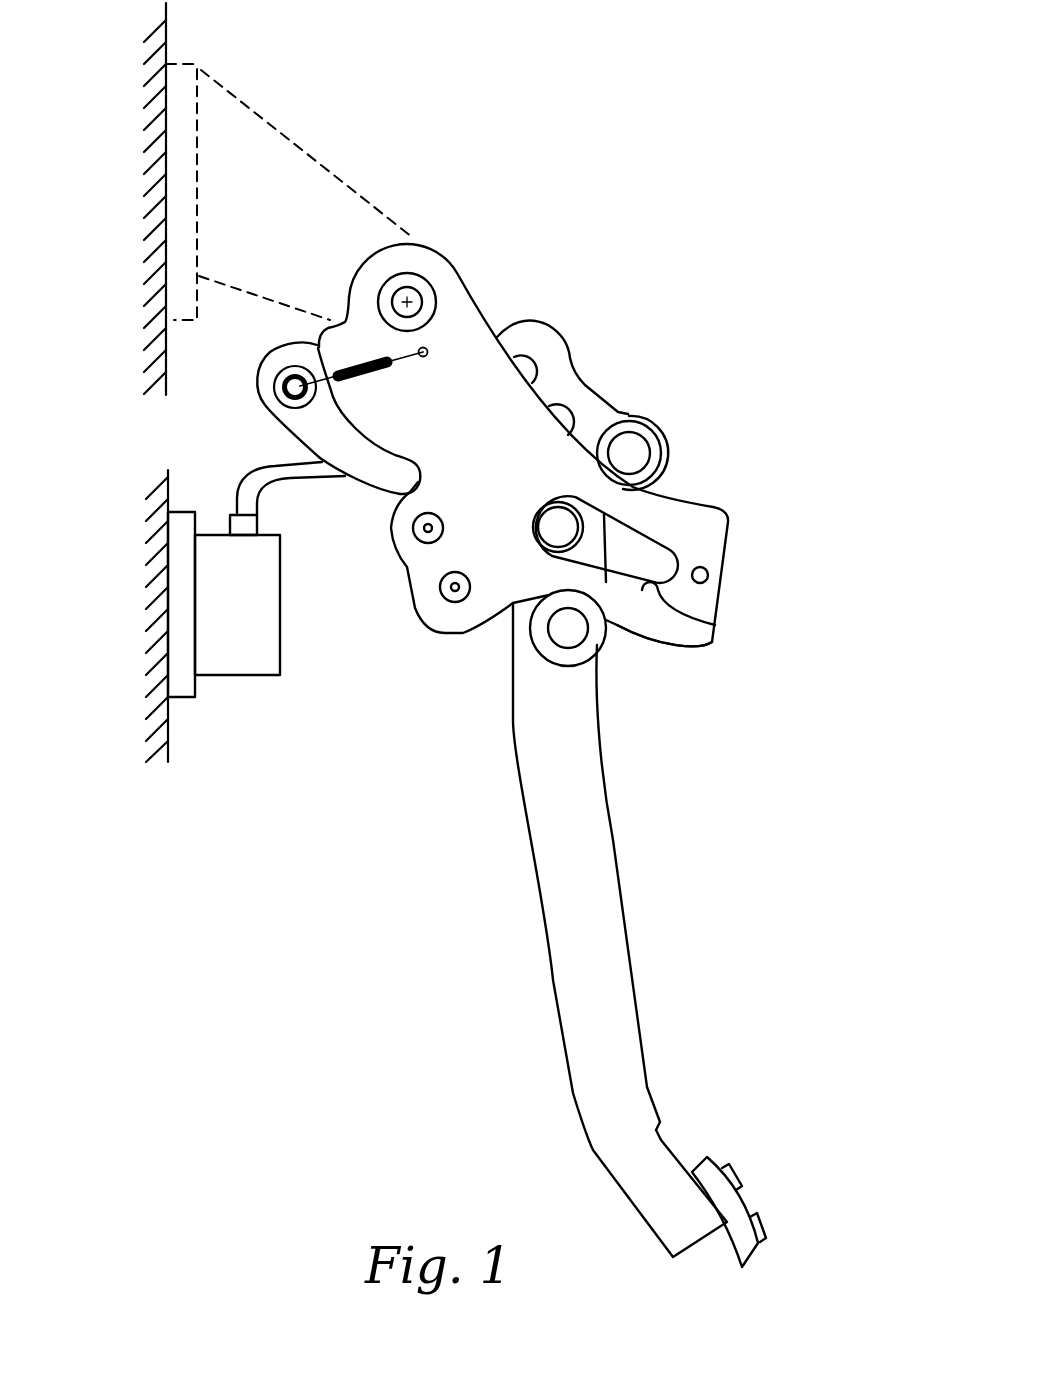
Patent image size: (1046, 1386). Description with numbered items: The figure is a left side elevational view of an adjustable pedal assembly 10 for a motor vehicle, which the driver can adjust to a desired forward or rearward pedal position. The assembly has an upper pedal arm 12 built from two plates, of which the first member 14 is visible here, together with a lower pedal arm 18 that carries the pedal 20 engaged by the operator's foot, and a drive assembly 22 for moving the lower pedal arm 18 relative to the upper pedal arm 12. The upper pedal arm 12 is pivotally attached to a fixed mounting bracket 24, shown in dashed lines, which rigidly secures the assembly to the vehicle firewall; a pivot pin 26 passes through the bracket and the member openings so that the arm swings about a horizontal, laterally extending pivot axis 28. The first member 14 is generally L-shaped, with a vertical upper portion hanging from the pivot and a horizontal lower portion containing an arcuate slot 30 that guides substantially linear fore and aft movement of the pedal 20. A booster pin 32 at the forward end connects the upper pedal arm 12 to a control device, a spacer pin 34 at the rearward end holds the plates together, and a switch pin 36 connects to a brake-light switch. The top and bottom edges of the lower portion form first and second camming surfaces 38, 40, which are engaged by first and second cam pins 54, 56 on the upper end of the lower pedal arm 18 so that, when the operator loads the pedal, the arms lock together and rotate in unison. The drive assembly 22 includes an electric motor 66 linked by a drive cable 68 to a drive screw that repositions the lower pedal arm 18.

The adjustable pedal assembly 10 is at (357, 868).
The upper pedal arm 12 is at (731, 542).
The first member 14 is at (715, 640).
The lower pedal arm 18 is at (624, 917).
The pedal 20 is at (750, 1197).
The drive assembly 22 is at (229, 678).
The mounting bracket 24 is at (292, 142).
The pivot pin 26 is at (407, 301).
The pivot axis 28 is at (408, 301).
The slot 30 is at (717, 626).
The booster pin 32 is at (413, 531).
The spacer pin 34 is at (708, 578).
The switch pin 36 is at (447, 591).
The first camming surface 38 is at (680, 498).
The second camming surface 40 is at (650, 641).
The first cam pin 54 is at (642, 433).
The second cam pin 56 is at (560, 650).
The electric motor 66 is at (273, 677).
The drive cable 68 is at (270, 463).